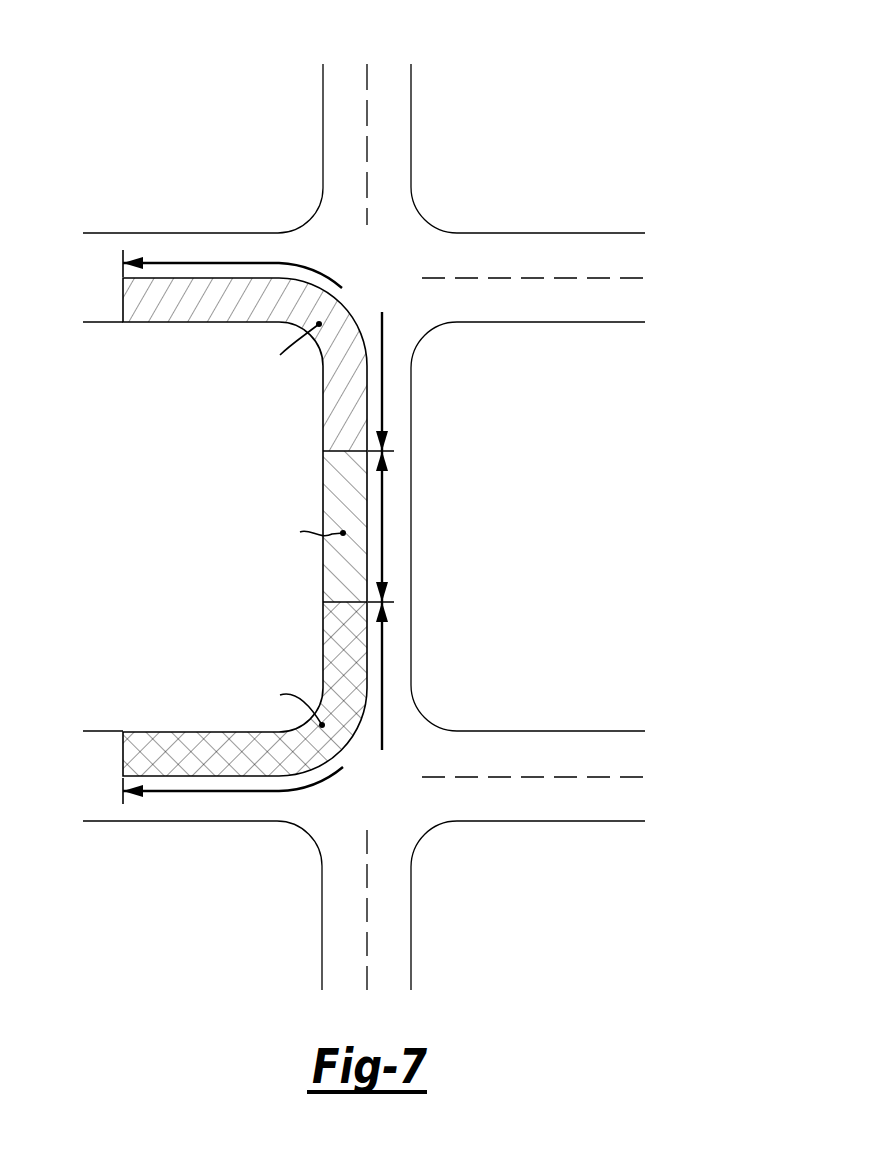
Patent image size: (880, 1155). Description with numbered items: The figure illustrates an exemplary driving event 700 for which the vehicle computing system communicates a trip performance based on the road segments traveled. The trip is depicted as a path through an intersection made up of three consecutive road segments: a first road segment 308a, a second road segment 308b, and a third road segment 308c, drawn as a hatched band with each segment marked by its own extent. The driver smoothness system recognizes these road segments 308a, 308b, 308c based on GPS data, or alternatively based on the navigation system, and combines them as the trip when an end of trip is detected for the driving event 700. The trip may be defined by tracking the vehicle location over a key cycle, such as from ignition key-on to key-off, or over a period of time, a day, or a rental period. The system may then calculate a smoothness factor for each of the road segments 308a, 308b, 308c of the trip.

The driving event 700 is at (125, 68).
The road segment 308a is at (358, 288).
The road segment 308b is at (410, 538).
The road segment 308c is at (368, 770).